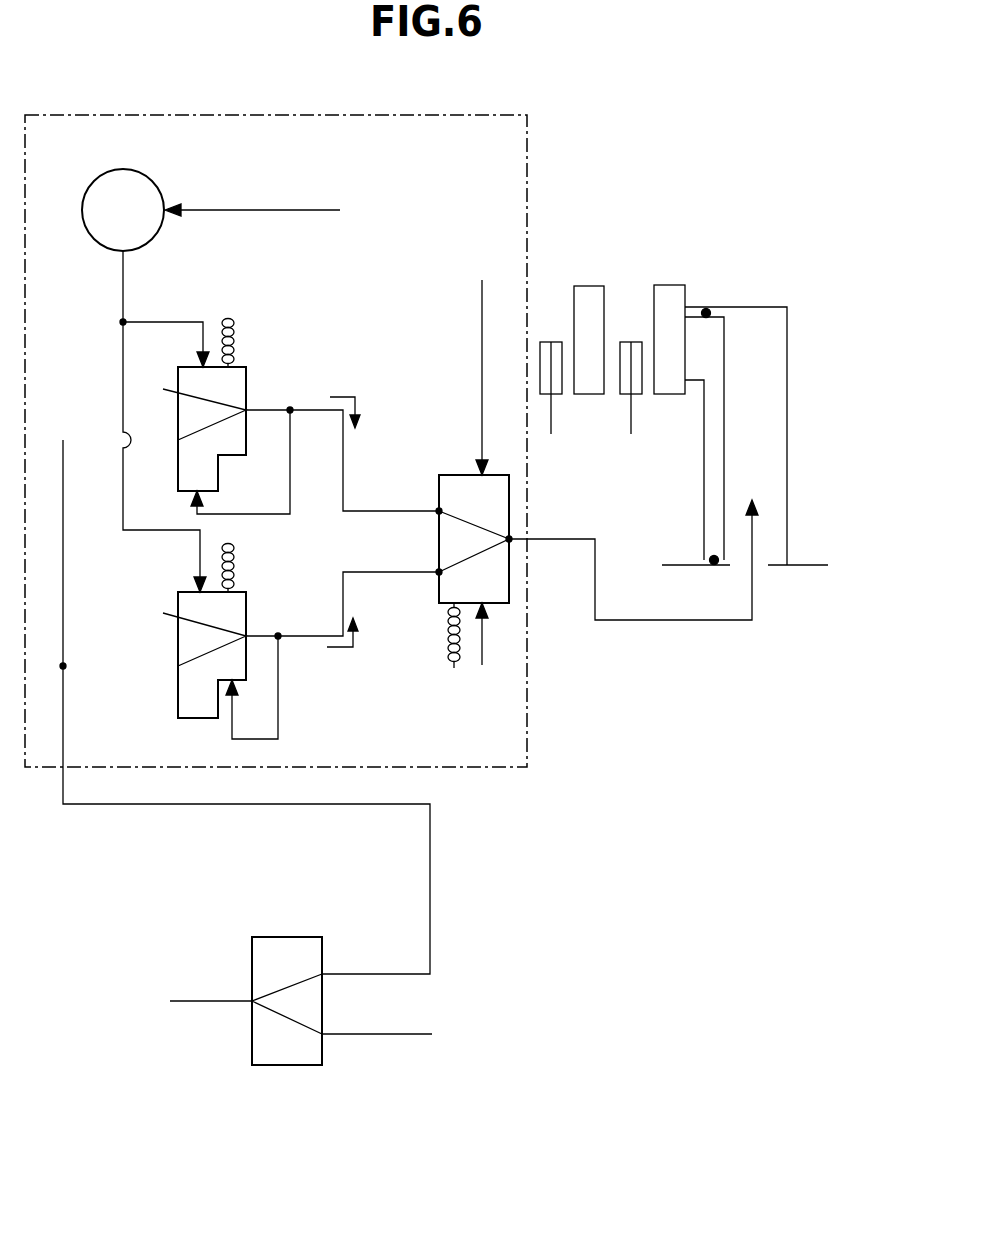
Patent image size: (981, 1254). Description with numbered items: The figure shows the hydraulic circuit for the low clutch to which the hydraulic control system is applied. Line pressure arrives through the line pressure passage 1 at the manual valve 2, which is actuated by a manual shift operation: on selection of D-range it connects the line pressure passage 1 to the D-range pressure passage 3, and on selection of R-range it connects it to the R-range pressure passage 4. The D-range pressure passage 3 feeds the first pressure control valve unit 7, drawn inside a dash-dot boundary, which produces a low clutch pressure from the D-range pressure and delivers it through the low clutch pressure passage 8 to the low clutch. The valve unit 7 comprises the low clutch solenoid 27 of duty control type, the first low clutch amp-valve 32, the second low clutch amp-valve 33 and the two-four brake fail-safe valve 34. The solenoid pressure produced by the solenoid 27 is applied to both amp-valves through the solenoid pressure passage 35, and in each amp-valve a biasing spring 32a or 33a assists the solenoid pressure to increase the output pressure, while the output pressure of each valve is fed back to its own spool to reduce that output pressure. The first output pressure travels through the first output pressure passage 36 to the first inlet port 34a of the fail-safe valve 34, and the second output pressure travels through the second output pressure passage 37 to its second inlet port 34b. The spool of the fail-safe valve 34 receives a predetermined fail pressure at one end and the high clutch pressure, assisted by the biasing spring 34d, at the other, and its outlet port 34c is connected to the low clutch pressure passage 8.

The first pressure control valve unit 7 is at (527, 180).
The low clutch solenoid 27 is at (163, 188).
The solenoid pressure passage 35 is at (118, 363).
The first low clutch amp-valve 32 is at (248, 371).
The biasing spring 32a is at (233, 322).
The first output pressure passage 36 is at (344, 453).
The second low clutch amp-valve 33 is at (248, 597).
The biasing spring 33a is at (233, 547).
The second output pressure passage 37 is at (344, 601).
The 2-4 brake fail-safe valve 34 is at (511, 478).
The first inlet port 34a is at (439, 511).
The second inlet port 34b is at (439, 572).
The outlet port 34c is at (509, 539).
The biasing spring 34d is at (449, 656).
The low clutch pressure passage 8 is at (685, 621).
The manual valve 2 is at (252, 955).
The line pressure passage 1 is at (203, 1004).
The D-range pressure passage 3 is at (430, 918).
The R-range pressure passage 4 is at (377, 1036).